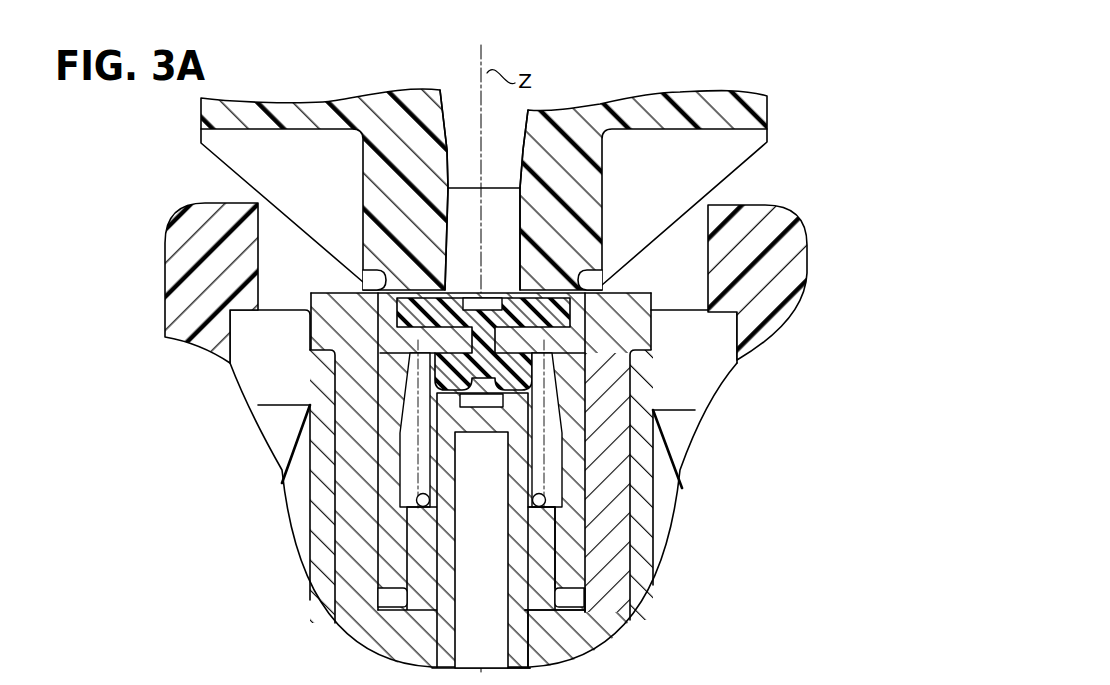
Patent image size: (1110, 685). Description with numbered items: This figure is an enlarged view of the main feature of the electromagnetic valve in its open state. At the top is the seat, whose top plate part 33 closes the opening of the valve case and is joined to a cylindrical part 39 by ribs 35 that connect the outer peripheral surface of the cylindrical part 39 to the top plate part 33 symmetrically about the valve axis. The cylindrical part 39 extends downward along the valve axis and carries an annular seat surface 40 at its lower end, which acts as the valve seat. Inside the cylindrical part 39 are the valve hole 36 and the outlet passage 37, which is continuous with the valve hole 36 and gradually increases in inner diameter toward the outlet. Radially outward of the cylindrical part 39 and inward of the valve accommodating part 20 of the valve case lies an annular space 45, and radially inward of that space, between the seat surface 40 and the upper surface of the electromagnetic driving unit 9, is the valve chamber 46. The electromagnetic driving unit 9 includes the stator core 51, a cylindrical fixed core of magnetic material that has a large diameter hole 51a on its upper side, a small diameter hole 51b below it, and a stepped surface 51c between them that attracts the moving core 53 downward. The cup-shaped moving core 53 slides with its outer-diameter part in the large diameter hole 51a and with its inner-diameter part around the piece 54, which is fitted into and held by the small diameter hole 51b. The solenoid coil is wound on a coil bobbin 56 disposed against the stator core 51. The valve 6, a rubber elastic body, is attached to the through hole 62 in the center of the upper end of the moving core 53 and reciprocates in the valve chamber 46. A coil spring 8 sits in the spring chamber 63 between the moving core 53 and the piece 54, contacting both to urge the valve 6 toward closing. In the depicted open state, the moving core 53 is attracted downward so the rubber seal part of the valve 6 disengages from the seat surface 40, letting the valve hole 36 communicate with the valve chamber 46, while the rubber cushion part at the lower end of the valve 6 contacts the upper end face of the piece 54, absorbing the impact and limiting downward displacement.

The valve 6 is at (275, 377).
The coil spring 8 is at (412, 480).
The electromagnetic driving unit 9 is at (318, 627).
The valve accommodating part 20 is at (180, 269).
The top plate part 33 is at (693, 112).
The ribs 35 is at (285, 147).
The valve hole 36 is at (500, 240).
The outlet passage 37 is at (456, 118).
The cylindrical part 39 is at (380, 203).
The seat surface 40 is at (397, 293).
The annular space 45 is at (683, 288).
The valve chamber 46 is at (635, 340).
The stator core 51 is at (383, 447).
The large diameter hole 51a is at (577, 513).
The small diameter hole 51b is at (525, 658).
The stepped surface 51c is at (555, 598).
The moving core 53 is at (398, 478).
The piece 54 is at (418, 557).
The coil bobbin 56 is at (357, 413).
The through hole 62 is at (560, 400).
The spring chamber 63 is at (548, 468).